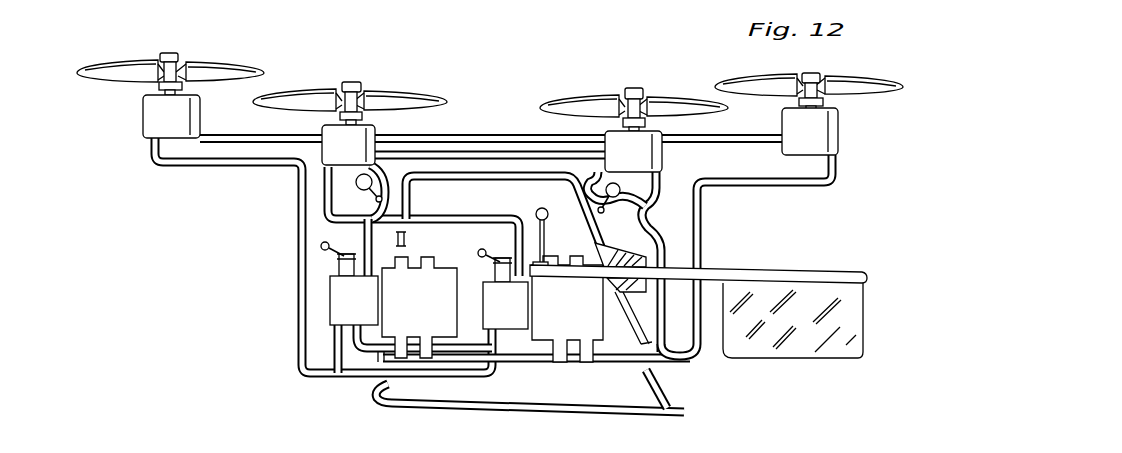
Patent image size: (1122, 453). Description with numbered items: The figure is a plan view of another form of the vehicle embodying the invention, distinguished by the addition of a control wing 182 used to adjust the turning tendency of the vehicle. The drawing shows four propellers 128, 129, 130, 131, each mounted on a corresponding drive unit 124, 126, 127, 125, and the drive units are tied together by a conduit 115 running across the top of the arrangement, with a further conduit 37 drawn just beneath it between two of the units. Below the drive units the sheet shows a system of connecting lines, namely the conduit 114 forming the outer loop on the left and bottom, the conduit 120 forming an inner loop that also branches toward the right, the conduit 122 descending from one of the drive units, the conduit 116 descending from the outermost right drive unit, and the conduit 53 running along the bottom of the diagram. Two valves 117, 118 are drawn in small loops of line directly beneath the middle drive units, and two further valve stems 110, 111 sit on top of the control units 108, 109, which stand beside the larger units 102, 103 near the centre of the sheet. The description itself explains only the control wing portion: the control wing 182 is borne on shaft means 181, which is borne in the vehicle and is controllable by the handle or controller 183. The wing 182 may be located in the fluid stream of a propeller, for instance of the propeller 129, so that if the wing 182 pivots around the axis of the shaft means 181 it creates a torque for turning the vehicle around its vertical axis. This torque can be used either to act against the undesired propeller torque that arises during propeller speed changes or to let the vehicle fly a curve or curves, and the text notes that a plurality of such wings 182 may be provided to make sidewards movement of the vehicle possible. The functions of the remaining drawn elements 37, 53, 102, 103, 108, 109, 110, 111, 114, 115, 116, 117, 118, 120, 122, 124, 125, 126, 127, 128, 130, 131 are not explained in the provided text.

The conduit 37 is at (492, 152).
The conduit 53 is at (542, 360).
The pump unit 102 is at (417, 297).
The pump unit 103 is at (567, 309).
The control valve unit 108 is at (357, 289).
The control valve unit 109 is at (509, 293).
The valve stem 110 is at (320, 246).
The valve stem 111 is at (478, 252).
The conduit 114 is at (207, 160).
The conduit 115 is at (223, 133).
The conduit 116 is at (794, 183).
The valve 117 is at (361, 192).
The valve 118 is at (604, 214).
The conduit 120 is at (458, 214).
The conduit 122 is at (657, 186).
The fluid motor 124 is at (144, 120).
The fluid motor 125 is at (838, 140).
The fluid motor 126 is at (322, 147).
The fluid motor 127 is at (655, 152).
The propeller 128 is at (121, 62).
The propeller 129 is at (738, 78).
The propeller 130 is at (307, 91).
The propeller 131 is at (583, 95).
The shaft means 181 is at (712, 276).
The control wing 182 is at (792, 348).
The handle or controller 183 is at (547, 219).